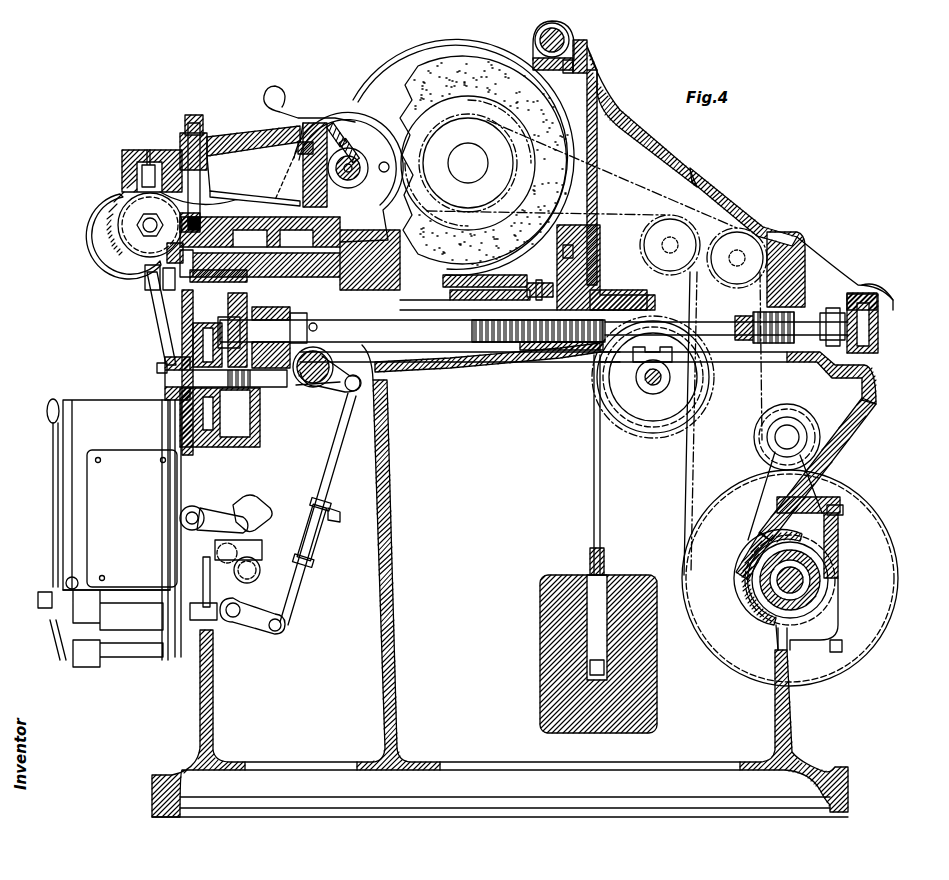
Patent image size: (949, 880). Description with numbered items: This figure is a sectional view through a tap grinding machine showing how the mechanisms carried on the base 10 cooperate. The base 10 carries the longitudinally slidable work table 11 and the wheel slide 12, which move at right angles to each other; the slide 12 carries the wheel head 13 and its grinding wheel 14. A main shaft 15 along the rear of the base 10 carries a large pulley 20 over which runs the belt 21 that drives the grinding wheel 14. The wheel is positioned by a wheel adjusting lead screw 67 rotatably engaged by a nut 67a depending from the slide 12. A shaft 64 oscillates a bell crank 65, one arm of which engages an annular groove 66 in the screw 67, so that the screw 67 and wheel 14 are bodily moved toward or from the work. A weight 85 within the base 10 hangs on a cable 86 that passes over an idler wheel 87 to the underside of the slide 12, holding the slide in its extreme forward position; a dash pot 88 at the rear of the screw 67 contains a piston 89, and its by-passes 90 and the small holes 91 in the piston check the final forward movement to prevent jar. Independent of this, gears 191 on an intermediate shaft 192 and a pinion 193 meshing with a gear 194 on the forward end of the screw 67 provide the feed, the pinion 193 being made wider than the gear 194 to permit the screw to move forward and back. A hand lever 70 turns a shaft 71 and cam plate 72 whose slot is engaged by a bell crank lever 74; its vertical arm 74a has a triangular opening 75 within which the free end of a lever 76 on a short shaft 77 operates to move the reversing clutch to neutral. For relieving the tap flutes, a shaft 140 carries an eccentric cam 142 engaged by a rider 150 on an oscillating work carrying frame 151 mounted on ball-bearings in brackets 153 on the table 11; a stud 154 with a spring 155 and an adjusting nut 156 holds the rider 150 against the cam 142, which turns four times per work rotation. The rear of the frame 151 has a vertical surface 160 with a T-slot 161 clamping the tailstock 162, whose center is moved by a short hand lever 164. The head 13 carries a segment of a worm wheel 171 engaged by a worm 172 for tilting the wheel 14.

The base 10 is at (870, 408).
The table 11 is at (148, 290).
The slide 12 is at (782, 230).
The head 13 is at (586, 64).
The grinding wheel 14 is at (398, 95).
The main shaft 15 is at (838, 562).
The large pulley 20 is at (876, 660).
The belt 21 is at (683, 497).
The shaft 64 is at (240, 626).
The bell crank 65 is at (340, 389).
The annular groove 66 is at (390, 377).
The wheel adjusting lead screw 67 is at (512, 348).
The nut 67a is at (553, 352).
The lever 70 is at (53, 528).
The shaft 71 is at (125, 604).
The cam plate 72 is at (192, 632).
The bell crank lever 74 is at (291, 590).
The vertical arm 74a is at (262, 560).
The triangular opening 75 is at (248, 512).
The lever 76 is at (212, 518).
The short shaft 77 is at (180, 515).
The weight 85 is at (540, 660).
The cable 86 is at (592, 500).
The idler wheel 87 is at (672, 440).
The dash pot 88 is at (876, 364).
The piston 89 is at (880, 322).
The by-passes 90 is at (858, 292).
The small holes 91 is at (878, 340).
The shaft 140 is at (137, 225).
The eccentric cam 142 is at (128, 232).
The rider 150 is at (125, 208).
The oscillating work carrying frame 151 is at (232, 136).
The brackets 153 is at (356, 110).
The stud 154 is at (192, 178).
The spring 155 is at (180, 132).
The nut 156 is at (187, 116).
The vertical surface 160 is at (300, 172).
The T-slot 161 is at (296, 148).
The tailstock 162 is at (345, 186).
The short hand lever 164 is at (283, 96).
The segment of a worm wheel 171 is at (536, 56).
The worm 172 is at (569, 38).
The gears 191 is at (202, 346).
The intermediate shaft 192 is at (168, 378).
The gear 193 is at (240, 398).
The gear 194 is at (238, 296).